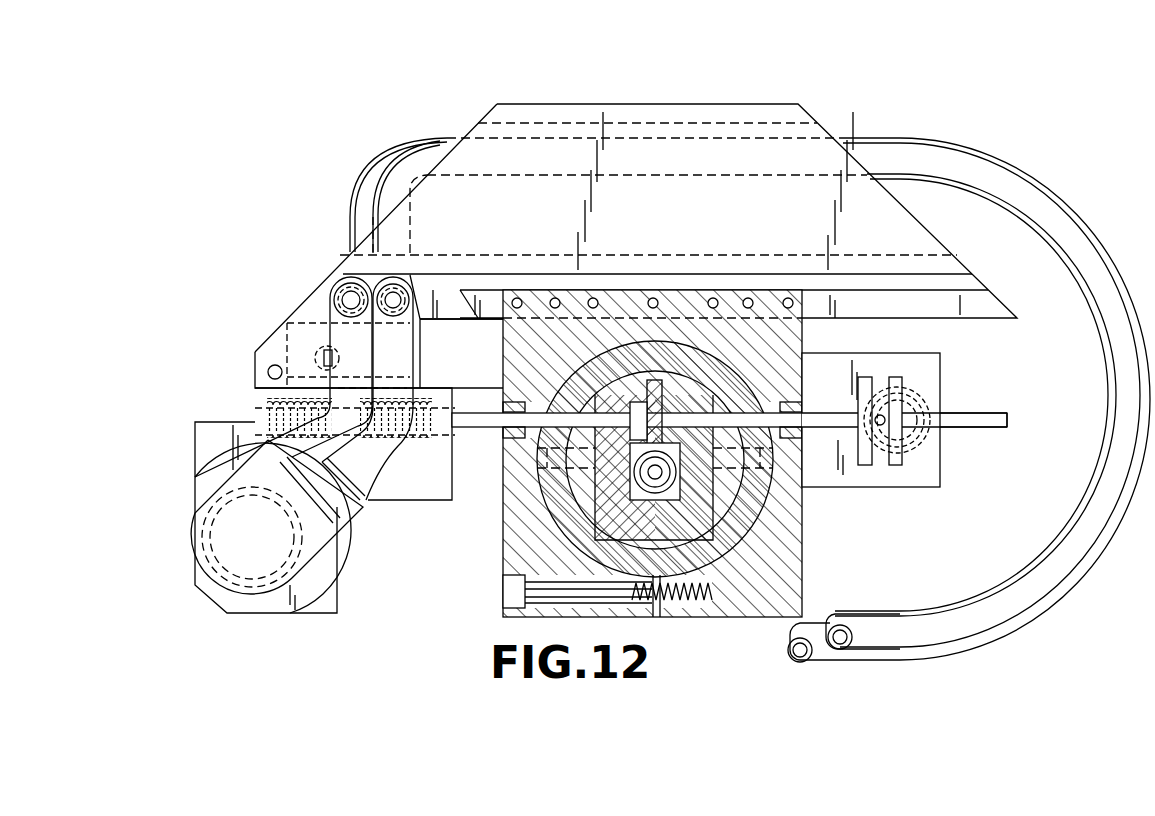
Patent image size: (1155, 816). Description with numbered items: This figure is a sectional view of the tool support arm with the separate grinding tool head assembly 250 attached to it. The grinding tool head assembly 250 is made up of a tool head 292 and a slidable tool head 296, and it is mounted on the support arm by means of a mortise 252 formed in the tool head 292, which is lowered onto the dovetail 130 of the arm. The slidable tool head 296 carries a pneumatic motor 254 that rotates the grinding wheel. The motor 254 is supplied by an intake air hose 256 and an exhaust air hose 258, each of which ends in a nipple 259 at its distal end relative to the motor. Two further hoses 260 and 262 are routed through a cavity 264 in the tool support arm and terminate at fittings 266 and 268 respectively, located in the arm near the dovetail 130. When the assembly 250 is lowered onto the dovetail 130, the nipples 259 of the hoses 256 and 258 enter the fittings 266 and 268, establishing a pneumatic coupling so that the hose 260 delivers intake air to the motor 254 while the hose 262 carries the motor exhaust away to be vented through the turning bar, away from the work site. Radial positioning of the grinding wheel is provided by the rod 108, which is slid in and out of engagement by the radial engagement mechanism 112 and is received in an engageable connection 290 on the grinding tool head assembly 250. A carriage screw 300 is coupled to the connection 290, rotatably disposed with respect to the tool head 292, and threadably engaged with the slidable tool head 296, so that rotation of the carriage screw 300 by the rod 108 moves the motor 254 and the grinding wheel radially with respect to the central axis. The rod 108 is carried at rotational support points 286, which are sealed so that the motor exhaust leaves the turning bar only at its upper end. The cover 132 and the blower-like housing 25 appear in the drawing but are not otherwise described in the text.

The blower housing 25 is at (165, 562).
The rod 108 is at (1000, 413).
The radial engagement mechanism 112 is at (885, 490).
The dovetail 130 is at (322, 338).
The cover 132 is at (788, 104).
The grinding tool head assembly 250 is at (178, 352).
The mortise 252 is at (320, 353).
The pneumatic motor 254 is at (293, 563).
The intake air hose 256 is at (415, 343).
The exhaust air hose 258 is at (300, 316).
The nipple 259 is at (346, 283).
The hose 260 is at (391, 166).
The hose 262 is at (350, 206).
The cavity 264 is at (750, 258).
The fitting 266 is at (427, 278).
The fitting 268 is at (330, 300).
The rotational support points 286 is at (505, 408).
The engageable connection 290 is at (460, 432).
The tool head 292 is at (252, 392).
The slidable tool head 296 is at (228, 420).
The carriage screw 300 is at (425, 447).